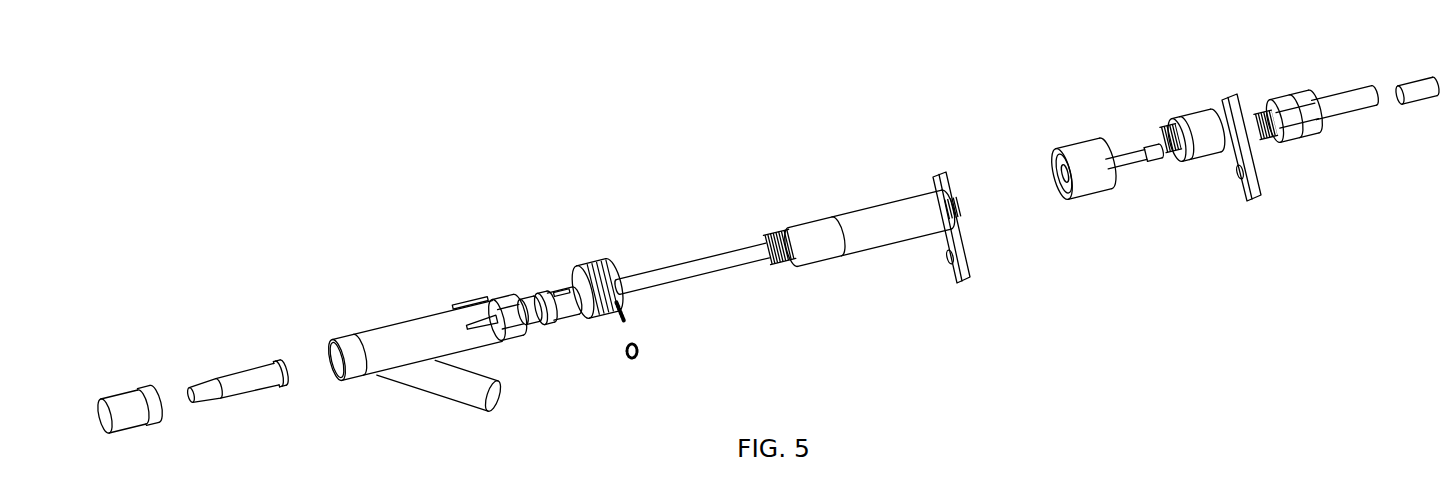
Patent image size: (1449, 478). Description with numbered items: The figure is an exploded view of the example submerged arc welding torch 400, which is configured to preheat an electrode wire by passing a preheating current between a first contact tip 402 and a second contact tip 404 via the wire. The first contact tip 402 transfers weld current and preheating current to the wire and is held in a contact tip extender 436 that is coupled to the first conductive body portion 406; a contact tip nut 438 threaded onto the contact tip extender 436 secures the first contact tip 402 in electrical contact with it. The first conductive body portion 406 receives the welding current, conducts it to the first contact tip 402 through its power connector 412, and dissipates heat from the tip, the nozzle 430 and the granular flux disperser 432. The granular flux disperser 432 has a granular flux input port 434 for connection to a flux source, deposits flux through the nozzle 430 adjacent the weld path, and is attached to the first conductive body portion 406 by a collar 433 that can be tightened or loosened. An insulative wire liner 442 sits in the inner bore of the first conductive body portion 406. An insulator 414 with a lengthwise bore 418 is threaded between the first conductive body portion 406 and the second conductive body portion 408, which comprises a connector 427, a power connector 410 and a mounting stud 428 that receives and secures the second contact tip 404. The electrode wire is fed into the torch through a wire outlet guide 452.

The SAW torch 400 is at (326, 153).
The first contact tip 402 is at (248, 392).
The second contact tip 404 is at (1116, 139).
The first conductive body portion 406 is at (863, 223).
The second conductive body portion 408 is at (1160, 59).
The power connector 410 is at (1218, 157).
The power connector 412 is at (927, 241).
The insulator 414 is at (1057, 181).
The bore 418 is at (1032, 200).
The connector 427 is at (1176, 124).
The mounting stud 428 is at (1317, 105).
The nozzle 430 is at (145, 423).
The granular flux disperser 432 is at (407, 336).
The collar 433 is at (581, 286).
The granular flux input port 434 is at (464, 389).
The contact tip extender 436 is at (524, 283).
The contact tip nut 438 is at (481, 303).
The insulative wire liner 442 is at (692, 261).
The wire outlet guide 452 is at (1392, 79).